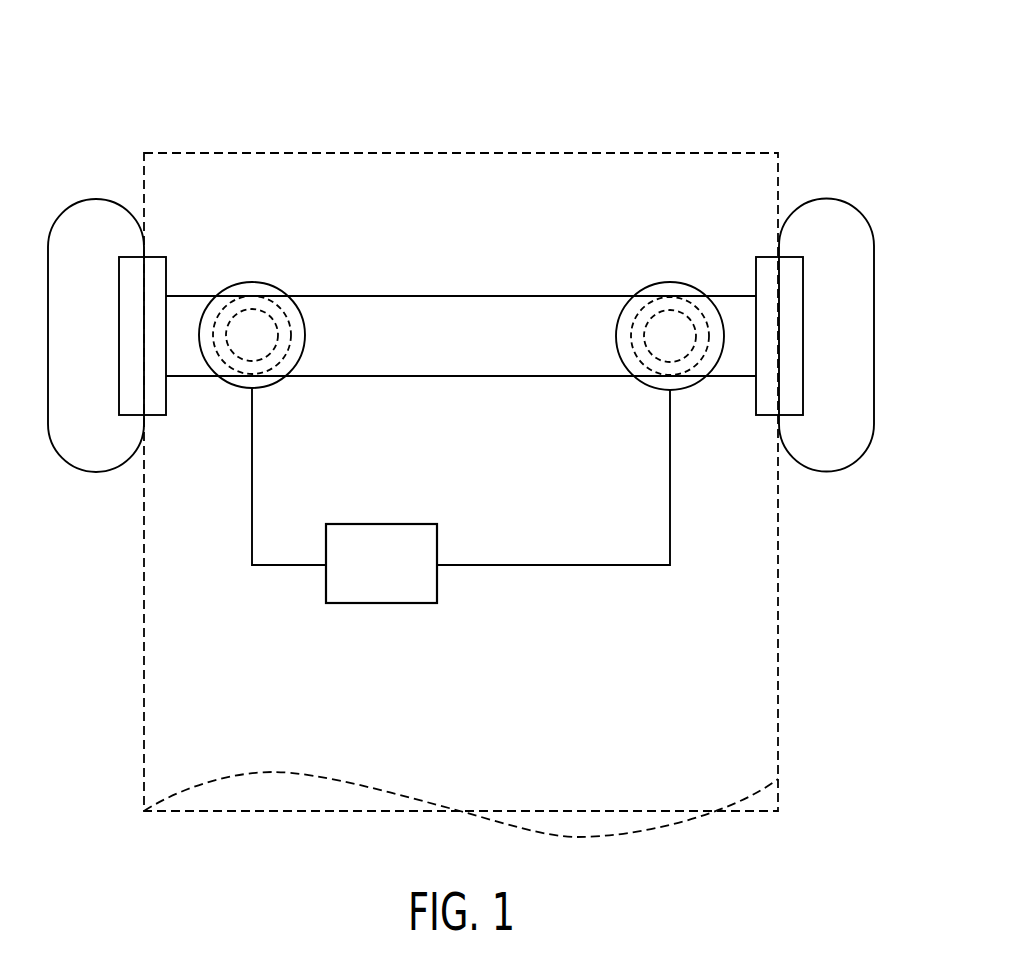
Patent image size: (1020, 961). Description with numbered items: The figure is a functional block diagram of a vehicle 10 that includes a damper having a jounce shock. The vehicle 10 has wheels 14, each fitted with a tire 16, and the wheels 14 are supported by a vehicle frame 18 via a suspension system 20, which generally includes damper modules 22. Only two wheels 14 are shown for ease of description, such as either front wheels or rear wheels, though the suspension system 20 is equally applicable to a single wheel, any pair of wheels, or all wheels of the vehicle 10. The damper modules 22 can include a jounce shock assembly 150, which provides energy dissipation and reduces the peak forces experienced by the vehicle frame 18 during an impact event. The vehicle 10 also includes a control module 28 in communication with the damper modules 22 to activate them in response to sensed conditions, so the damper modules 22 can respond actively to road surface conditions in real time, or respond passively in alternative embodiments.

The vehicle 10 is at (742, 85).
The wheel 14 is at (166, 415).
The tire 16 is at (97, 197).
The vehicle frame 18 is at (538, 151).
The suspension system 20 is at (598, 232).
The damper module 22 is at (305, 382).
The control module 28 is at (326, 583).
The jounce shock assembly 150 is at (262, 268).